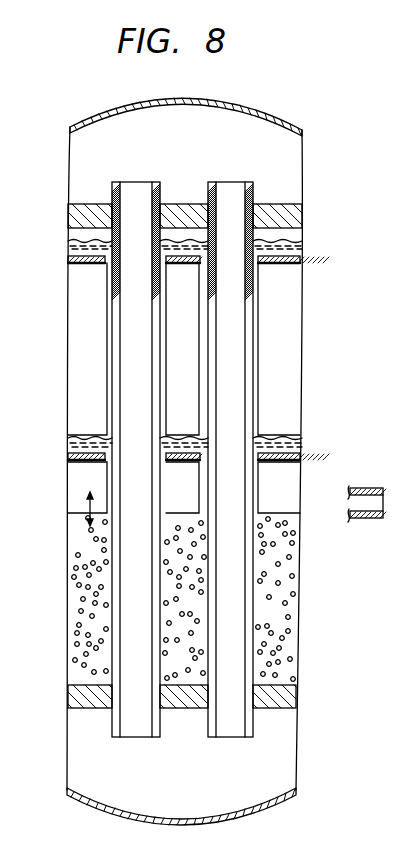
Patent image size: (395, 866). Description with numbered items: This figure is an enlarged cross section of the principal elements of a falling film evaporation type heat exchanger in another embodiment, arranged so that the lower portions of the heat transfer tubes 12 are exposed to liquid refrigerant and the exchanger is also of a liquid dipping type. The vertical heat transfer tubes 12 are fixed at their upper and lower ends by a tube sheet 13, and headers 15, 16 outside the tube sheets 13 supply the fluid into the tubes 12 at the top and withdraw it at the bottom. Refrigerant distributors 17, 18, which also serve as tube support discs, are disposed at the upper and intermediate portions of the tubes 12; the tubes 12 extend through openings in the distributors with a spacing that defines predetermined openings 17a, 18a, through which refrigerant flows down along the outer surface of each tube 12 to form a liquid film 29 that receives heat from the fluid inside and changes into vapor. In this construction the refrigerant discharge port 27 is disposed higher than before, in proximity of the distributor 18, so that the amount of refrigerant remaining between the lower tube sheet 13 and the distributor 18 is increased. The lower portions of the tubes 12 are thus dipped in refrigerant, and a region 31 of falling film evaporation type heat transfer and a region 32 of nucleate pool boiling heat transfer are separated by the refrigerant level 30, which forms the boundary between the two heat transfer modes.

The heat transfer tube 12 is at (80, 233).
The tube sheet 13 is at (88, 212).
The header 15 is at (272, 133).
The header 16 is at (265, 793).
The refrigerant distributor 17 is at (70, 256).
The opening 17a is at (104, 263).
The refrigerant distributor 18 is at (72, 452).
The opening 18a is at (104, 458).
The refrigerant discharge port 27 is at (365, 488).
The liquid film 29 is at (105, 318).
The refrigerant level 30 is at (82, 510).
The region of falling film evaporation type heat transfer 31 is at (327, 248).
The region of nucleate pool boiling heat transfer 32 is at (325, 517).